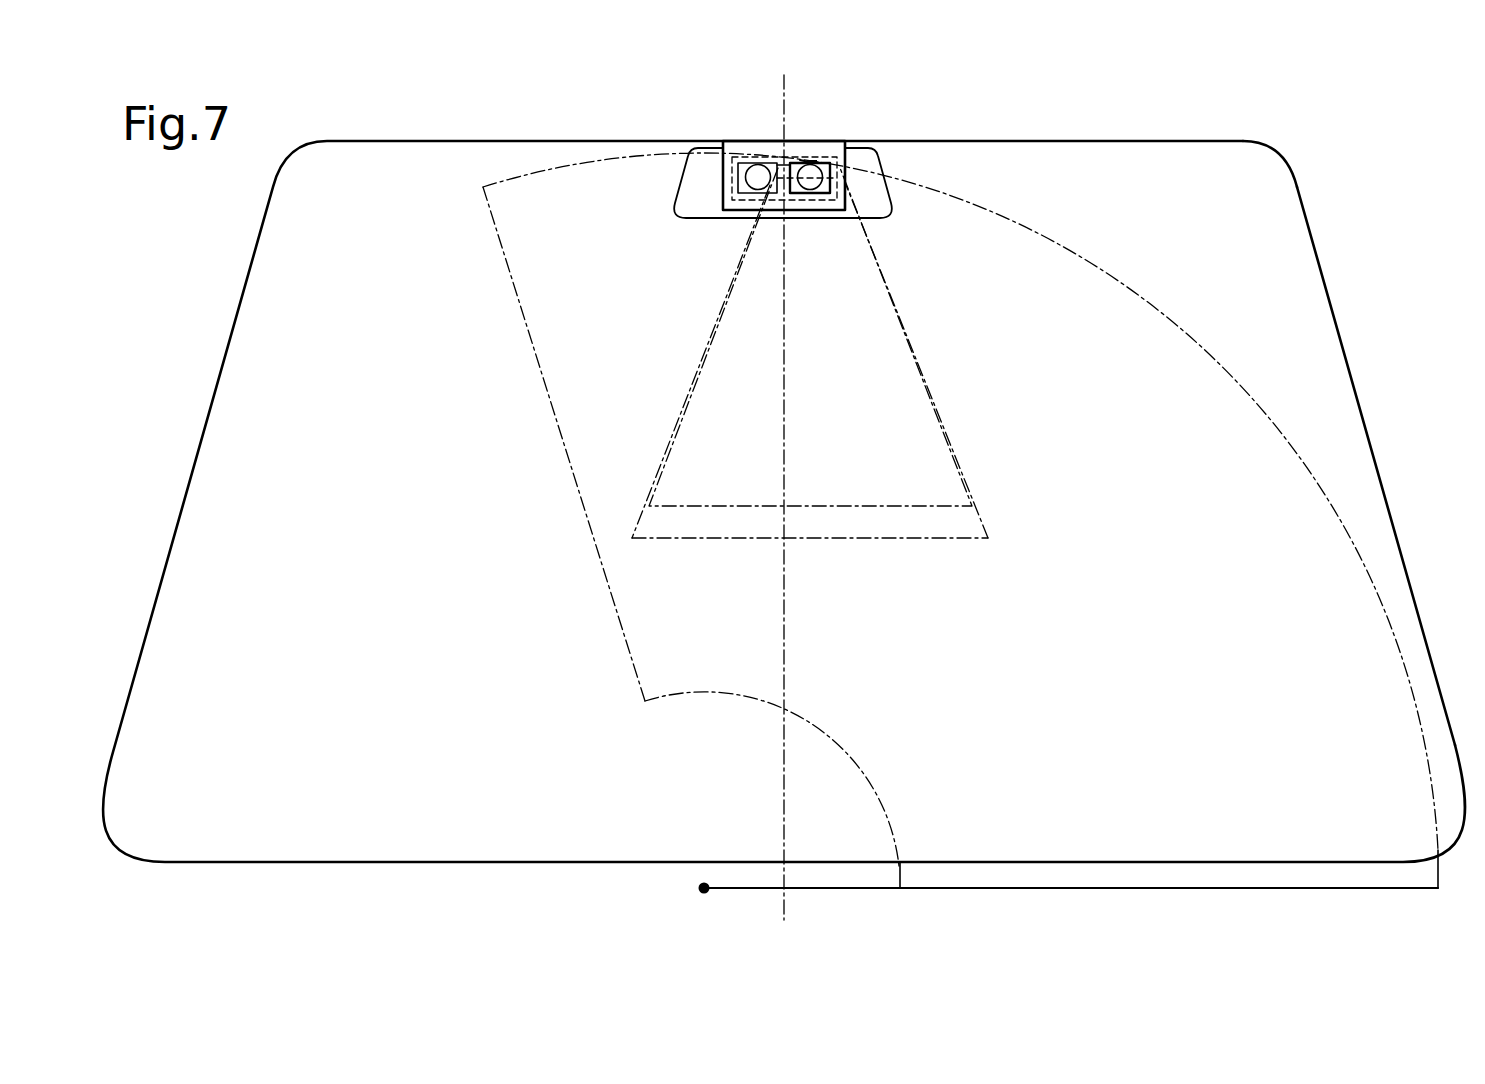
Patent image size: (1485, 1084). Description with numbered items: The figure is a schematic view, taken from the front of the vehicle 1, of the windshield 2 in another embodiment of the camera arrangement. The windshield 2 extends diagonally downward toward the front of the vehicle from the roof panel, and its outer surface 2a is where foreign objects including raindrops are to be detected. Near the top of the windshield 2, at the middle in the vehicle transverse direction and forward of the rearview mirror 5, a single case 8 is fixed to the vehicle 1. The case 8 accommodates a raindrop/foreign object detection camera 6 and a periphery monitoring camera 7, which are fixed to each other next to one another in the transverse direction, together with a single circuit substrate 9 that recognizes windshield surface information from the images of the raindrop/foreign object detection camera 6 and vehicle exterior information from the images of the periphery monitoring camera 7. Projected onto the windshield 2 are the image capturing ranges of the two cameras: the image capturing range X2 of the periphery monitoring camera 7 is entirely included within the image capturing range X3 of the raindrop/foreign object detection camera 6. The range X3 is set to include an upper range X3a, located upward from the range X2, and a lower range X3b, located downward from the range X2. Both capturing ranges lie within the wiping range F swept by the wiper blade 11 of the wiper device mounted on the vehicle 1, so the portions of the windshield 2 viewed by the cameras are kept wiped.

The vehicle 1 is at (1342, 142).
The windshield 2 is at (1307, 222).
The outer surface 2a is at (1350, 376).
The rearview mirror 5 is at (887, 210).
The raindrop/foreign object detection camera 6 is at (758, 190).
The periphery monitoring camera 7 is at (815, 190).
The case 8 is at (723, 165).
The circuit substrate 9 is at (872, 168).
The wiper blade 11 is at (1167, 886).
The wiping range F is at (1173, 320).
The image capturing range of the periphery monitoring camera X2 is at (912, 344).
The image capturing range of the raindrop/foreign object detection camera X3 is at (933, 390).
The upper range X3a is at (800, 160).
The lower range X3b is at (890, 538).